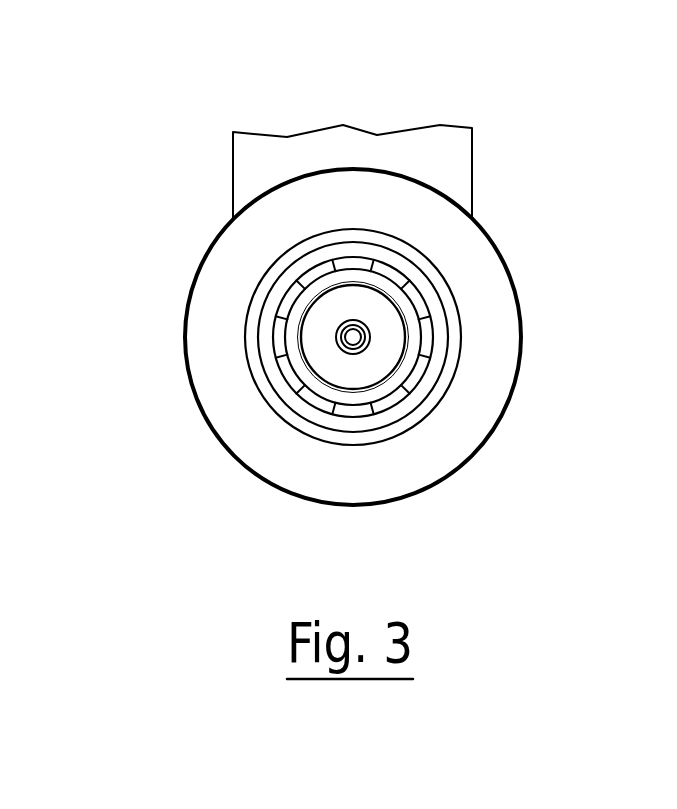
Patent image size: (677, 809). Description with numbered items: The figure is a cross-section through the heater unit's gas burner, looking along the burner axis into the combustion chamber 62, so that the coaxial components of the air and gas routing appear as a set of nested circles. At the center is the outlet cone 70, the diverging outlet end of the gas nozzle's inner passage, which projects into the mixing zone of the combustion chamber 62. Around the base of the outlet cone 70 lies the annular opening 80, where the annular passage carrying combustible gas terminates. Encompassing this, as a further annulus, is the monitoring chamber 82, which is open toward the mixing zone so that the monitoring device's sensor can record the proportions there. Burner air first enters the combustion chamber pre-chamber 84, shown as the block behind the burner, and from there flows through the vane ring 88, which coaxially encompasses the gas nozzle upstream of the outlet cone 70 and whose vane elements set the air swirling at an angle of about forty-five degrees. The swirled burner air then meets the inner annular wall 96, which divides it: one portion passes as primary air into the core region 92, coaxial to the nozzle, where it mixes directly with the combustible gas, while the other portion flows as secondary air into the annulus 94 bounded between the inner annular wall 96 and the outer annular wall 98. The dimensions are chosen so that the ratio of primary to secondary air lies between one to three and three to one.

The combustion chamber 62 is at (233, 453).
The outlet cone 70 is at (356, 336).
The annular opening 80 is at (368, 345).
The monitoring chamber 82 is at (360, 377).
The combustion chamber pre-chamber 84 is at (248, 148).
The vane ring 88 is at (290, 373).
The core region 92 is at (320, 340).
The annulus 94 is at (290, 302).
The inner annular wall 96 is at (352, 255).
The outer annular wall 98 is at (267, 273).